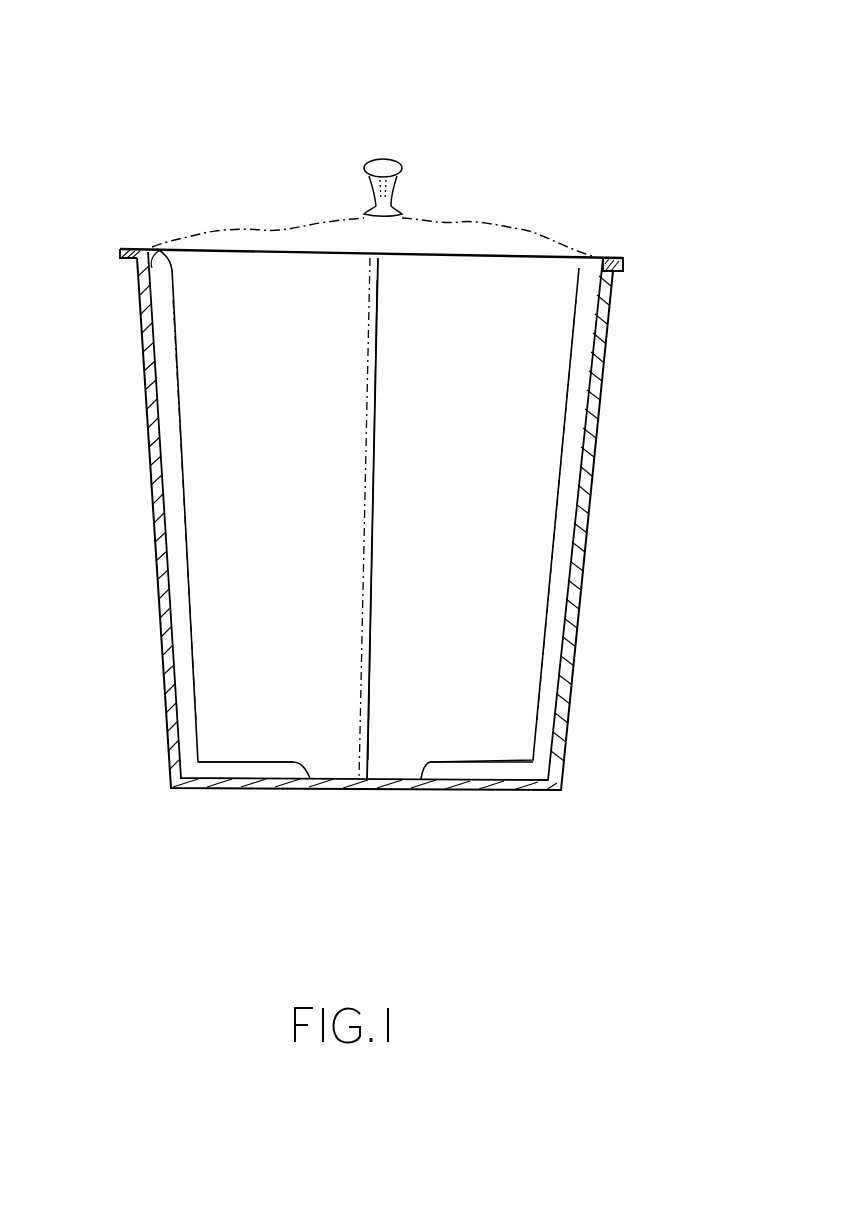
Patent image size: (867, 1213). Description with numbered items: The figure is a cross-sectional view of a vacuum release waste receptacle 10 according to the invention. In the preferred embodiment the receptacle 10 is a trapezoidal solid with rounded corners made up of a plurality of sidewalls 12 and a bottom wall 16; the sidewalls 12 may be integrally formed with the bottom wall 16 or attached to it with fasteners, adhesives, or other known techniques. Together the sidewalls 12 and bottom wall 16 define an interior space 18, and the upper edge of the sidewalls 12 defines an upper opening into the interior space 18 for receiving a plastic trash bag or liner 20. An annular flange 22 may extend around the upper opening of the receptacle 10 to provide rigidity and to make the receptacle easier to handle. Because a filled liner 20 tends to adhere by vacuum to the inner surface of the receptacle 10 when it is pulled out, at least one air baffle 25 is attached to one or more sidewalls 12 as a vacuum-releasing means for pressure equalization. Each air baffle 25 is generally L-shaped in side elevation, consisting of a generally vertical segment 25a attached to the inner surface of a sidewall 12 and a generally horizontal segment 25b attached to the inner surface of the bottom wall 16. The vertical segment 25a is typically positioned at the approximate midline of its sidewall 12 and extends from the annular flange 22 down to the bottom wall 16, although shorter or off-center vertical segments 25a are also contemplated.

The vacuum release waste receptacle 10 is at (355, 116).
The sidewall 12 is at (140, 380).
The bottom wall 16 is at (387, 787).
The interior space 18 is at (260, 292).
The trash bag or liner 20 is at (392, 168).
The annular flange 22 is at (625, 262).
The air baffle 25 is at (198, 499).
The vertical segment 25a is at (377, 325).
The horizontal segment 25b is at (222, 762).